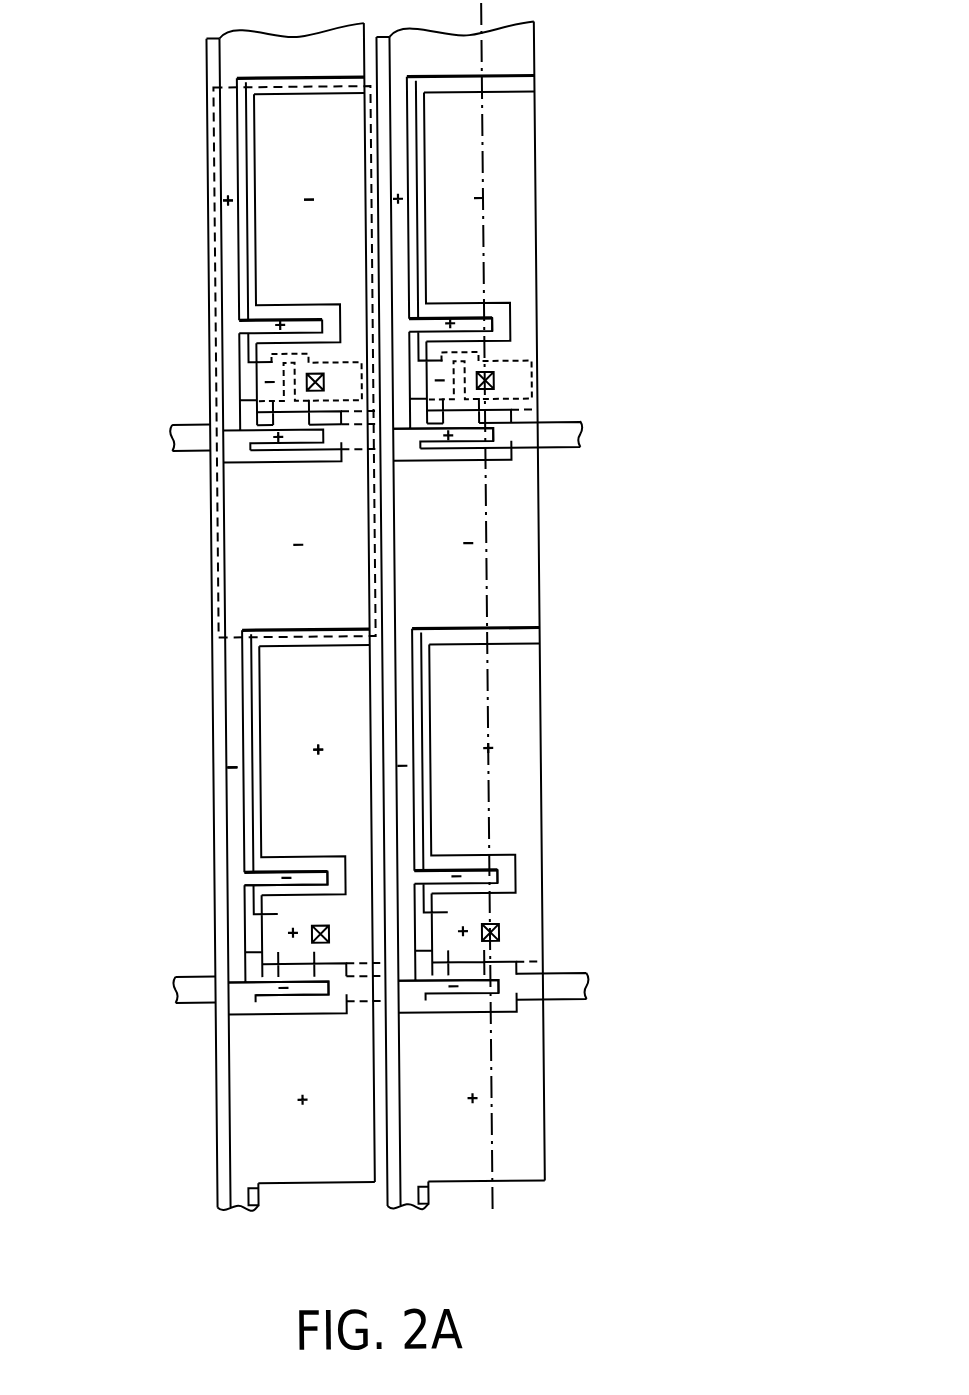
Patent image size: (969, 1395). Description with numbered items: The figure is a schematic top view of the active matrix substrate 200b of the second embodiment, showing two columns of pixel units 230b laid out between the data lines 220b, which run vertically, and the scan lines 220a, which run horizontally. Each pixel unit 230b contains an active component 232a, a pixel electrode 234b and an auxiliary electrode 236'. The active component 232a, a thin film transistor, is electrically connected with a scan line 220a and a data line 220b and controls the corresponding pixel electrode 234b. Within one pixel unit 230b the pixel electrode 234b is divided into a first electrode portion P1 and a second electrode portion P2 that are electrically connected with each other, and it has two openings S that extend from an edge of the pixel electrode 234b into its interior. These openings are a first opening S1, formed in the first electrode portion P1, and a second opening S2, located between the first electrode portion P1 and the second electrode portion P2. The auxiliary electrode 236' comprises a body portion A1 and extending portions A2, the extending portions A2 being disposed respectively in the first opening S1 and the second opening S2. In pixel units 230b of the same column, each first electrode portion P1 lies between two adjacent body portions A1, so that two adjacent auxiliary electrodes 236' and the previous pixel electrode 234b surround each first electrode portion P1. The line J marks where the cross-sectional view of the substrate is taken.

The active matrix substrate 200b is at (674, 1260).
The scan line 220a is at (560, 434).
The data line 220b is at (217, 1207).
The pixel unit 230b is at (263, 86).
The active component 232a is at (521, 345).
The pixel electrode 234b is at (113, 282).
The auxiliary electrode 236' is at (183, 817).
The first electrode portion P1 is at (511, 179).
The second electrode portion P2 is at (511, 559).
The first opening S1 is at (501, 316).
The second opening S2 is at (502, 441).
The opening S is at (499, 868).
The body portion A1 is at (219, 736).
The extending portion A2 is at (300, 877).
The line J- J is at (523, 1216).